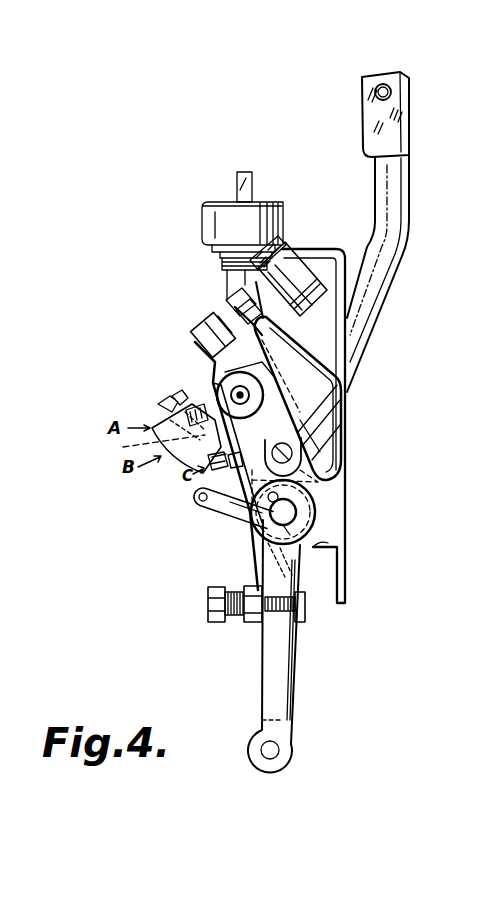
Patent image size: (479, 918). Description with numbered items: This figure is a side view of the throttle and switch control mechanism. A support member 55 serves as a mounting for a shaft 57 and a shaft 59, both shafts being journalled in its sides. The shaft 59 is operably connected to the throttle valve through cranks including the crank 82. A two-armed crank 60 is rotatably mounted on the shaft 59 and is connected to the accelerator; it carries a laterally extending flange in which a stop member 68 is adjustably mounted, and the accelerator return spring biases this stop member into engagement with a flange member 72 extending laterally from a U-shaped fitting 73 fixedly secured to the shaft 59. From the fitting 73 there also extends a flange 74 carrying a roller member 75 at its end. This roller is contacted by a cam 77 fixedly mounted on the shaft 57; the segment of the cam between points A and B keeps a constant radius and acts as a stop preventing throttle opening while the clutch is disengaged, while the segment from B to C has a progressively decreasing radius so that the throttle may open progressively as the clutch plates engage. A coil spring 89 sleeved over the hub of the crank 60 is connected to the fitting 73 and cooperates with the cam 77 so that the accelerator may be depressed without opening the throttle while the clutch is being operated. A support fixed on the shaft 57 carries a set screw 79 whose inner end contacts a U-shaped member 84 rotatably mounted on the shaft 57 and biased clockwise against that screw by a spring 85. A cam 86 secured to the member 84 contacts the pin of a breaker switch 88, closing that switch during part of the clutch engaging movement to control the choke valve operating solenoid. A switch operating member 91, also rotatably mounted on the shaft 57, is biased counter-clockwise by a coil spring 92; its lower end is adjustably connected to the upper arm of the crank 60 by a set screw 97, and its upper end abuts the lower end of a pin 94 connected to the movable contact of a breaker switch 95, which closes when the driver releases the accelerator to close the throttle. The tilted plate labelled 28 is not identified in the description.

The crank 82 is at (388, 177).
The breaker switch 88 is at (262, 214).
The breaker switch 95 is at (287, 256).
The cam 86 is at (293, 333).
The spring 85 is at (250, 362).
The coil spring 92 is at (270, 393).
The mounting plate 28 is at (277, 423).
The pin 94 is at (212, 343).
The switch operating member 91 is at (207, 365).
The shaft 57 is at (232, 395).
The set screw 79 is at (167, 400).
The cam 77 is at (160, 425).
The U-shaped member 84 is at (150, 447).
The set screw 97 is at (208, 468).
The roller member 75 is at (193, 500).
The flange 74 is at (228, 512).
The shaft 59 is at (277, 518).
The coil spring 89 is at (268, 553).
The U-shaped fitting 73 is at (318, 482).
The support member 55 is at (343, 495).
The stop member 68 is at (235, 617).
The flange member 72 is at (303, 623).
The two-armed crank 60 is at (283, 670).